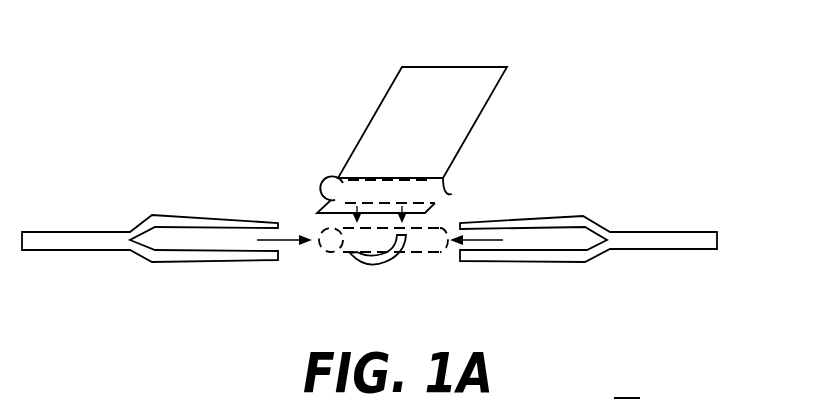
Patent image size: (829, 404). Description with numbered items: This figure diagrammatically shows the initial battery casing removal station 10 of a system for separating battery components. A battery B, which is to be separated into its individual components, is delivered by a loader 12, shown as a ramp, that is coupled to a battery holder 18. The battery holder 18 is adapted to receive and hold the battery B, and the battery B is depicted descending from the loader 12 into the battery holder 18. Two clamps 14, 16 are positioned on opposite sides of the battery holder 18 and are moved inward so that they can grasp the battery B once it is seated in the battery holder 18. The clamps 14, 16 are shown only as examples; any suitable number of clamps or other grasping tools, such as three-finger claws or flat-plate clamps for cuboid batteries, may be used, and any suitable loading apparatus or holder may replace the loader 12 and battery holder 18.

The battery casing removal station 10 is at (200, 74).
The loader 12 is at (410, 125).
The battery B is at (433, 193).
The clamp 14 is at (205, 262).
The clamp 16 is at (590, 253).
The battery holder 18 is at (383, 258).